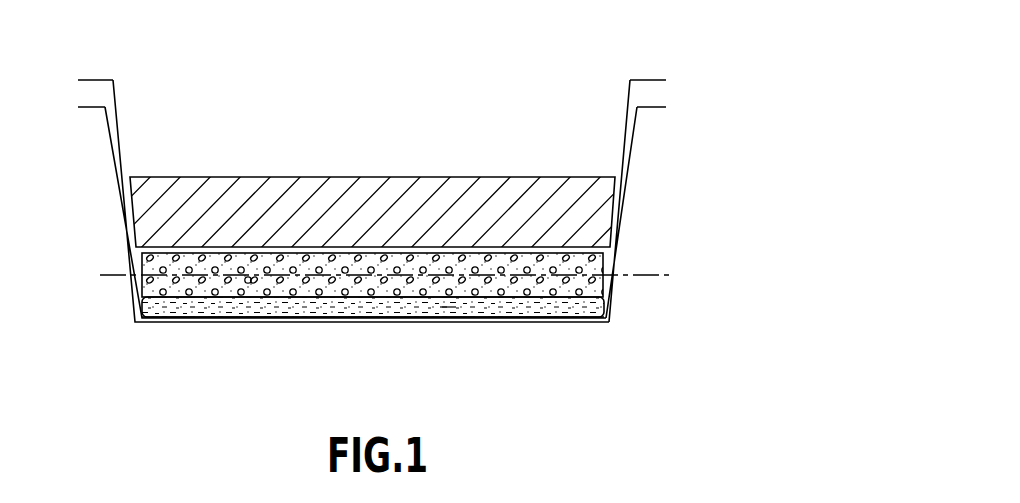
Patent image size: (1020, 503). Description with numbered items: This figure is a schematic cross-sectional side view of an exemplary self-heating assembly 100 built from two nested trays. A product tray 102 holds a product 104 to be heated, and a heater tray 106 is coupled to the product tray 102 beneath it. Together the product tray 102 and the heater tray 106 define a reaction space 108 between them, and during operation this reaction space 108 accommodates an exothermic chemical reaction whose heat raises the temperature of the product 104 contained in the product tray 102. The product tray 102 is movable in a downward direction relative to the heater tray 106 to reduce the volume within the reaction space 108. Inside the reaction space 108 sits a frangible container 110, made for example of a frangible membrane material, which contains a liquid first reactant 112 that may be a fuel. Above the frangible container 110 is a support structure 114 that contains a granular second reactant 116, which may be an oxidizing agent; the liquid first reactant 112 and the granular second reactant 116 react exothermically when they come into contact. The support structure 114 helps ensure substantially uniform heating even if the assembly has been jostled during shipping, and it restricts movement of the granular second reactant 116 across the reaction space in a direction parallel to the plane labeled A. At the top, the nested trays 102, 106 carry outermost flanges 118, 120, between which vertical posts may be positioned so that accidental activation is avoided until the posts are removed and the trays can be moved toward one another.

The self-heating assembly 100 is at (413, 86).
The product tray 102 is at (126, 126).
The product 104 is at (370, 177).
The heater tray 106 is at (634, 147).
The reaction space 108 is at (347, 300).
The frangible container 110 is at (196, 309).
The liquid first reactant 112 is at (448, 308).
The support structure 114 is at (133, 258).
The granular second reactant 116 is at (248, 283).
The outermost flange 118 is at (100, 78).
The outermost flange 120 is at (96, 108).